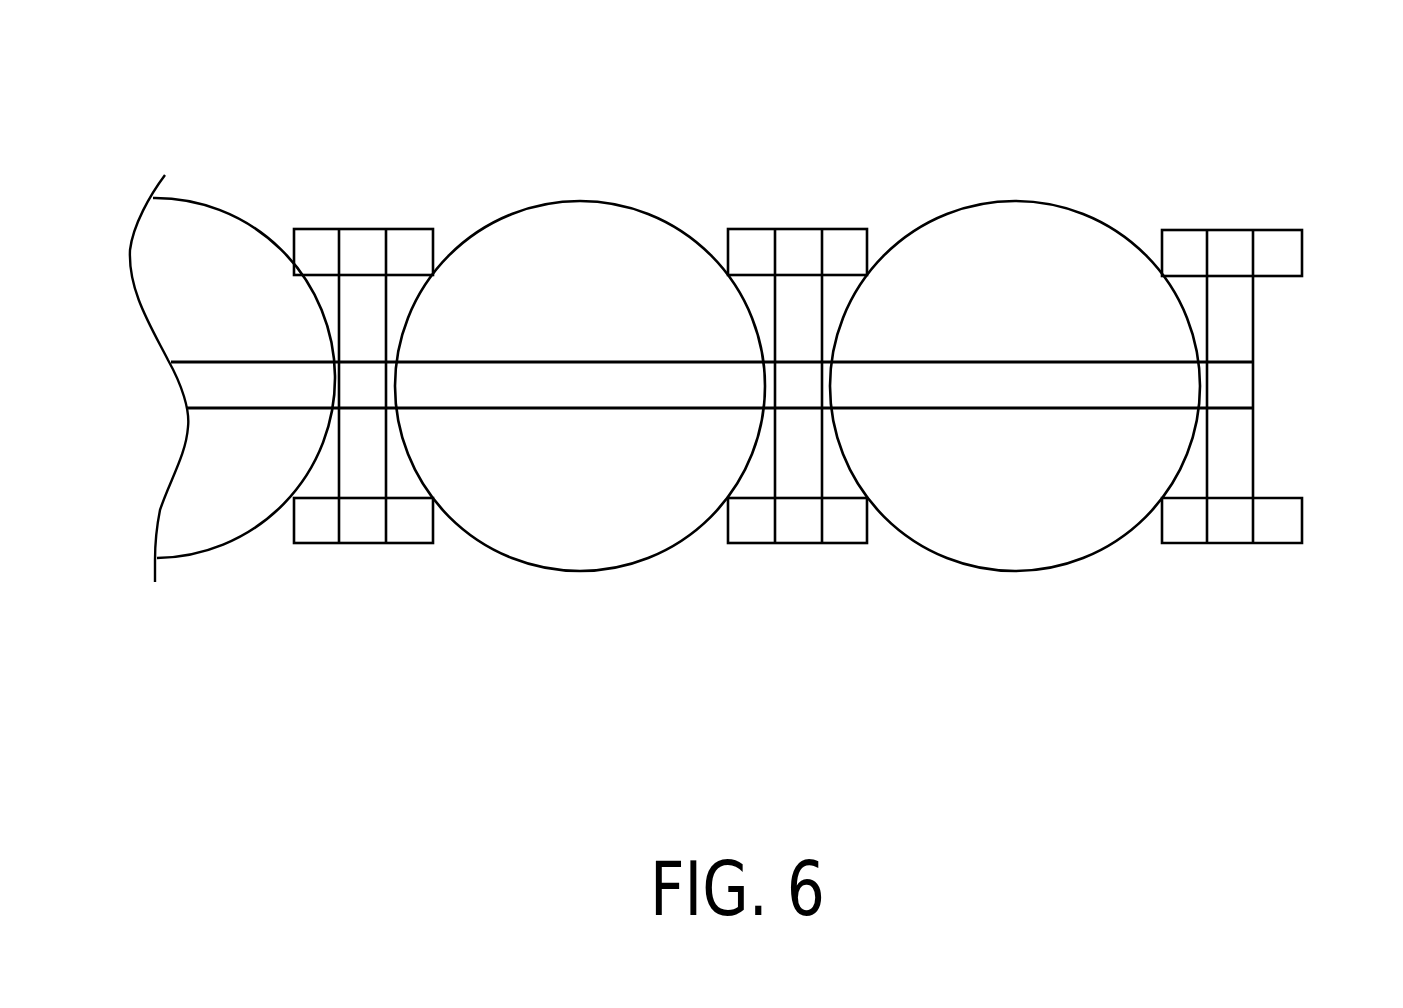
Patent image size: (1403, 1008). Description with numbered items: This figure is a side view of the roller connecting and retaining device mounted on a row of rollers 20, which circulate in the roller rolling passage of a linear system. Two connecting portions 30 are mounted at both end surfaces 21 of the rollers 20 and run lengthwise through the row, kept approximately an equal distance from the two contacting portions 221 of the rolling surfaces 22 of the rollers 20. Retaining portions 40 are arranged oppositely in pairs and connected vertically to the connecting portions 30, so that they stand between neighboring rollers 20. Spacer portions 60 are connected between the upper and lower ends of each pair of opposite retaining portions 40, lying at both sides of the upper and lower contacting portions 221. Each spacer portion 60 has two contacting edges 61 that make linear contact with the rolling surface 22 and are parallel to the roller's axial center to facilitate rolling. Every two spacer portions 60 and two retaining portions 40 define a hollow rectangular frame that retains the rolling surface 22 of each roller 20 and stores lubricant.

The roller 20 is at (1030, 165).
The end surface 21 is at (1015, 319).
The contacting portion 221 is at (982, 200).
The rolling surface 22 is at (1264, 335).
The retaining portion 40 is at (1230, 268).
The connecting portion 30 is at (1243, 385).
The spacer portion 60 is at (1215, 590).
The contacting edge 61 is at (1185, 525).